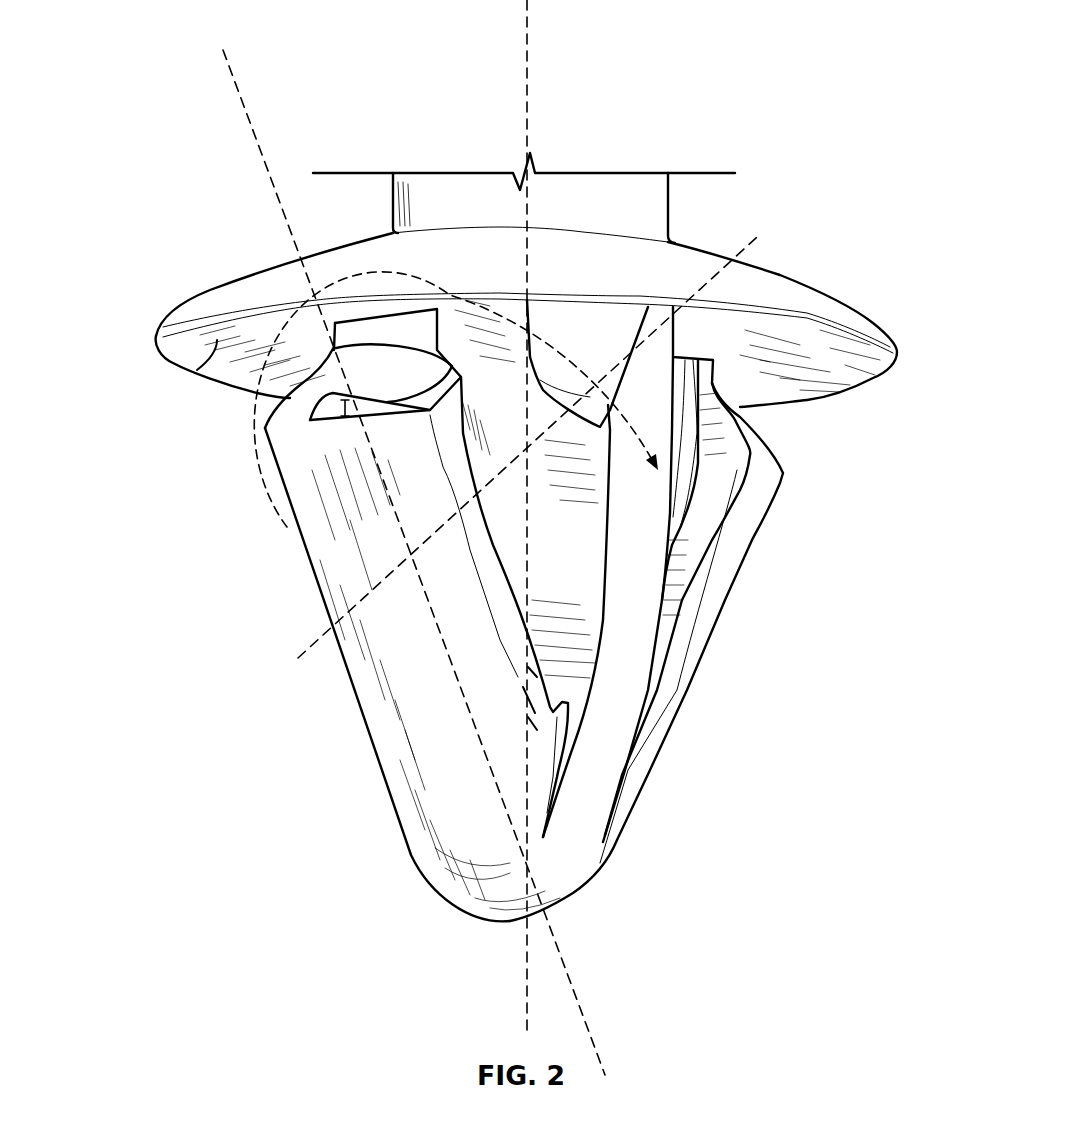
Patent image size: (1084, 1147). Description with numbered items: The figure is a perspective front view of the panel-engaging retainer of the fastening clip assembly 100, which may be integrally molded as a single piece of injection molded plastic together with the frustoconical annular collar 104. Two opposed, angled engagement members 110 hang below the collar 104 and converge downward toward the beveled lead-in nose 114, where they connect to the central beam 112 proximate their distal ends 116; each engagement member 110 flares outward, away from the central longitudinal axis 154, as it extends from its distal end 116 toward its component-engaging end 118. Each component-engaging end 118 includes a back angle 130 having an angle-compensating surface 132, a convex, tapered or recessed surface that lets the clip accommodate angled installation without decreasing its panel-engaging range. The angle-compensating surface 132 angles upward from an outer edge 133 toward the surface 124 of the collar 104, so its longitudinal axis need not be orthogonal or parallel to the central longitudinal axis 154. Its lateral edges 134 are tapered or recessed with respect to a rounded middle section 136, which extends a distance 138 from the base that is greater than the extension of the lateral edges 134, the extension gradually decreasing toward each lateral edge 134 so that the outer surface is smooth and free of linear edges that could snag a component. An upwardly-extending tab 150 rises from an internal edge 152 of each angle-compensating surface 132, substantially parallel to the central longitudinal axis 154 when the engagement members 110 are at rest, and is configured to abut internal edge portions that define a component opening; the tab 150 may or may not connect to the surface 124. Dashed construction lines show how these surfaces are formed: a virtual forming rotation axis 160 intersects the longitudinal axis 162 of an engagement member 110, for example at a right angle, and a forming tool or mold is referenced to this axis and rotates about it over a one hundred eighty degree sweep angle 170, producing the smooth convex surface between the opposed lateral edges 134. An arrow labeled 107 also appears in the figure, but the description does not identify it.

The fastening clip assembly 100 is at (152, 216).
The annular collar 104 is at (177, 325).
The insertion direction 107 is at (311, 794).
The engagement members 110 is at (345, 666).
The central beam 112 is at (627, 680).
The beveled lead-in nose 114 is at (522, 912).
The distal end 116 is at (434, 831).
The component-engaging end 118 is at (412, 363).
The surface of the collar 124 is at (197, 370).
The back angles 130 is at (290, 398).
The angle-compensating surfaces 132 is at (367, 378).
The outer edges 133 is at (280, 437).
The lateral edges 134 is at (275, 418).
The rounded middle section 136 is at (290, 505).
The distance 138 is at (432, 367).
The upwardly-extending tab 150 is at (400, 323).
The internal edge 152 is at (500, 313).
The central longitudinal axis 154 is at (528, 50).
The forming rotation axis 160 is at (357, 600).
The longitudinal axis of an engagement member 162 is at (255, 140).
The sweep angle 170 is at (302, 302).